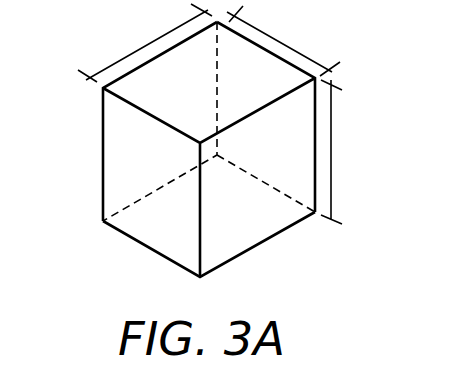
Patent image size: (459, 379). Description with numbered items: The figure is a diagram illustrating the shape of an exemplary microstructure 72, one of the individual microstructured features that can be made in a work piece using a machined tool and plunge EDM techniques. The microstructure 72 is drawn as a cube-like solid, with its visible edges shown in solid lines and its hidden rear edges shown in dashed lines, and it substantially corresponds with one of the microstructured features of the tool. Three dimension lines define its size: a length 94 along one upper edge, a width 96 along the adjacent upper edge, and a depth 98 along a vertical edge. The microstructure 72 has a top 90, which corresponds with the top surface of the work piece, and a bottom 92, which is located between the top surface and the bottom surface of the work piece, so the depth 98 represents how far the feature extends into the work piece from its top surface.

The microstructure 72 is at (117, 163).
The top 90 is at (103, 88).
The bottom 92 is at (223, 265).
The length 94 is at (143, 47).
The width 96 is at (278, 39).
The depth 98 is at (332, 147).